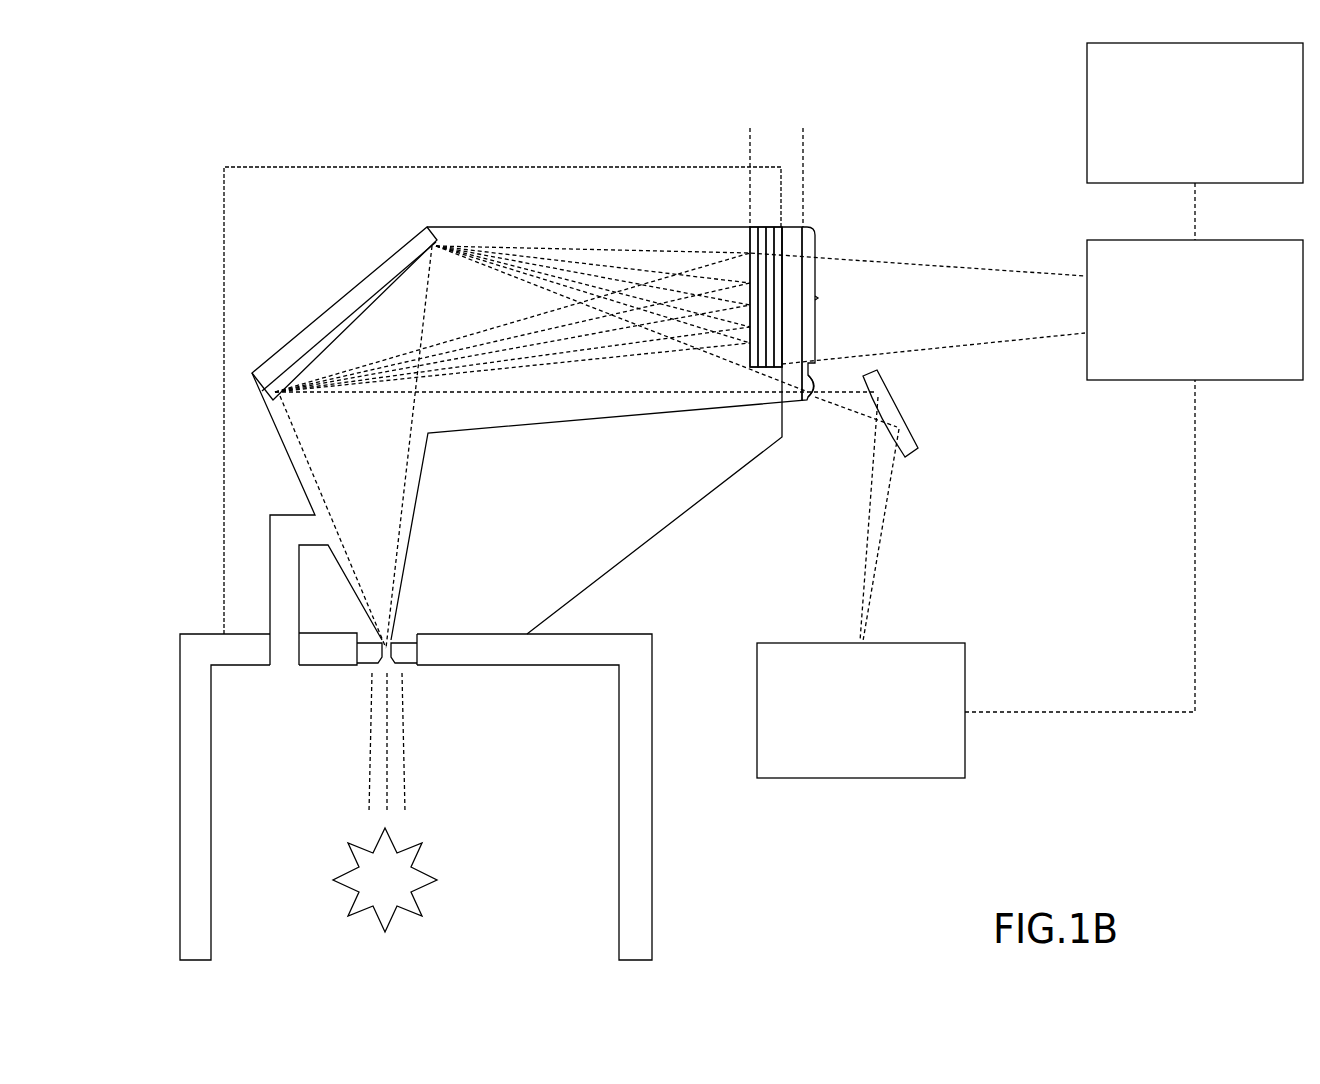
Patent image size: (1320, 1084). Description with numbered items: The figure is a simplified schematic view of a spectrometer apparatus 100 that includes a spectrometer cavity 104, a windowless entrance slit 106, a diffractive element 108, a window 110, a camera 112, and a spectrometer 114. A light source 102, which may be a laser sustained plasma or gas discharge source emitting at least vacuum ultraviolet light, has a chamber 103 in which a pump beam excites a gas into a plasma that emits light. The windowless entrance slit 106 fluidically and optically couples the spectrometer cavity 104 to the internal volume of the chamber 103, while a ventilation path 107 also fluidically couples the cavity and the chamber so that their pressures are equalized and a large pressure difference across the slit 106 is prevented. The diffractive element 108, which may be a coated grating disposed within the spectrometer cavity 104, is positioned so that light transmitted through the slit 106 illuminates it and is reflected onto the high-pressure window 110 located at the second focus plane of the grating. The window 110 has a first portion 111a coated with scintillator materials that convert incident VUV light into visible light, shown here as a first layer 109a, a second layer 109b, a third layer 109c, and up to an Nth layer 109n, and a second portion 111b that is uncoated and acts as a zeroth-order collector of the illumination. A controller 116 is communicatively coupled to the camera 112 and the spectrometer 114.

The spectrometer apparatus 100 is at (203, 143).
The light source 102 is at (383, 877).
The chamber 103 is at (167, 634).
The spectrometer cavity 104 is at (323, 441).
The windowless entrance slit 106 is at (392, 663).
The ventilation path 107 is at (283, 663).
The diffractive element 108 is at (273, 385).
The first layer of scintillator material 109a is at (755, 227).
The second layer of scintillator material 109b is at (762, 227).
The third layer of scintillator material 109c is at (769, 227).
The Nth layer of scintillator material 109n is at (776, 227).
The window 110 is at (803, 130).
The first portion of the window 111a is at (836, 314).
The second portion of the window 111b is at (819, 393).
The camera 112 is at (1124, 264).
The spectrometer 114 is at (794, 671).
The controller 116 is at (1124, 69).